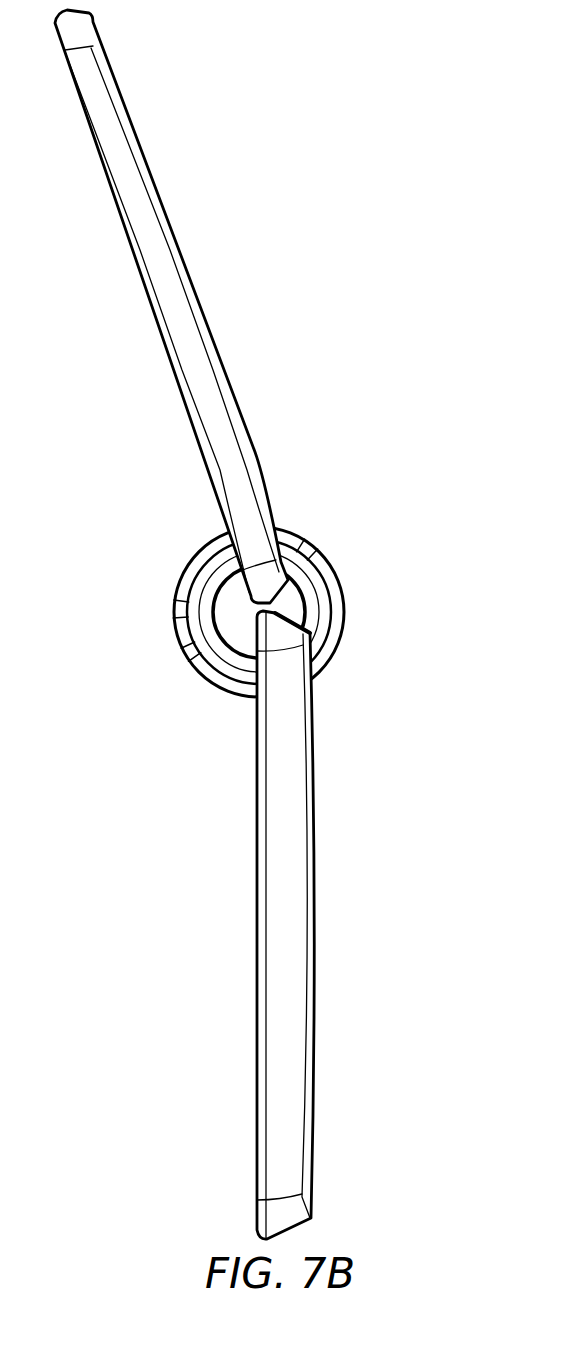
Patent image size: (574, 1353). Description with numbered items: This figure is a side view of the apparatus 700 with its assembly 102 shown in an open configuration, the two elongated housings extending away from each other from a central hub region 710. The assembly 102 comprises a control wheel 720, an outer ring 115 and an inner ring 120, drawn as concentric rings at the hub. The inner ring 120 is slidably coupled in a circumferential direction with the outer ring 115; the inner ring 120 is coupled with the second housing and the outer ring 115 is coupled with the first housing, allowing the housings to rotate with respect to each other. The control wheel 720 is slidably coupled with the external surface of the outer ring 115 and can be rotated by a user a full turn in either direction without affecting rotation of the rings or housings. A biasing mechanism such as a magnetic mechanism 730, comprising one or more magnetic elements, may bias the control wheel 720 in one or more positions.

The apparatus 700 is at (241, 624).
The hinge assembly 710 is at (318, 436).
The control wheel 720 is at (203, 546).
The magnetic mechanism 730 is at (173, 610).
The outer ring 115 is at (307, 543).
The inner ring 120 is at (322, 567).
The assembly 102 is at (353, 600).